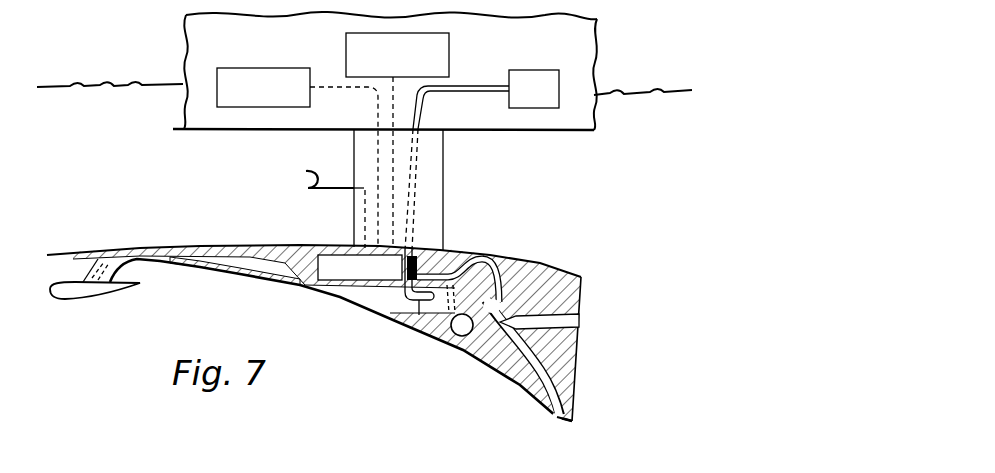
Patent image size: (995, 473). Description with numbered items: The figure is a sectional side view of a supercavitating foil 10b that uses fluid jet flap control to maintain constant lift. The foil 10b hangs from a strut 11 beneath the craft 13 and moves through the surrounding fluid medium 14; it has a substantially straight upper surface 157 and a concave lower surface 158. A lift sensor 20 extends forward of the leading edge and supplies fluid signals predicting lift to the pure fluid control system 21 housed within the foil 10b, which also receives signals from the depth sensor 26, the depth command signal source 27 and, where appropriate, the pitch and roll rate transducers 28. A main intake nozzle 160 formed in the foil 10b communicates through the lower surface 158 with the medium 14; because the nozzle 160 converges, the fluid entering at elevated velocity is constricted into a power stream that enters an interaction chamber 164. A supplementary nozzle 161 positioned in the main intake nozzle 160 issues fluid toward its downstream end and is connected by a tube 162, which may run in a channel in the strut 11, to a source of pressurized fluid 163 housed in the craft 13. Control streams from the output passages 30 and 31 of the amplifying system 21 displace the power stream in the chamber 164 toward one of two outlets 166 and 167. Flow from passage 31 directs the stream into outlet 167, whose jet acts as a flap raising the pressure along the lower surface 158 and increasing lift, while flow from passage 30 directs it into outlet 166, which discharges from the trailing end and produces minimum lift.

The supercavitating foil 10b is at (567, 254).
The strut 11 is at (444, 178).
The craft 13 is at (552, 131).
The fluid medium 14 is at (95, 83).
The lift sensor 20 is at (73, 296).
The fluid control system 21 is at (360, 267).
The depth sensor 26 is at (324, 206).
The depth command signal source 27 is at (397, 140).
The pitch and roll rate transducers 28 is at (297, 158).
The output passage 30 is at (464, 337).
The output passage 31 is at (488, 256).
The upper surface 157 is at (176, 246).
The lower surface 158 is at (217, 266).
The main intake nozzle 160 is at (391, 311).
The nozzle 161 is at (397, 316).
The tube 162 is at (472, 86).
The source of pressurized fluid 163 is at (534, 89).
The interaction chamber 164 is at (501, 313).
The outlet 166 is at (564, 322).
The outlet 167 is at (564, 422).